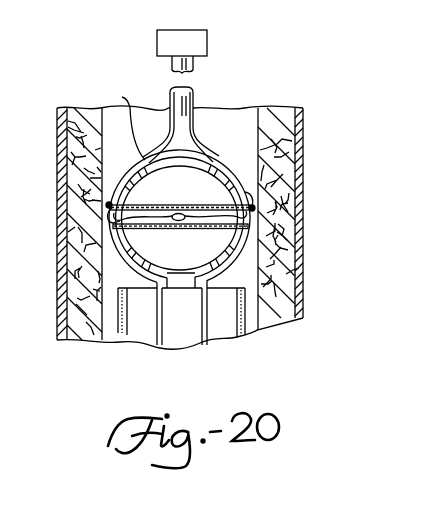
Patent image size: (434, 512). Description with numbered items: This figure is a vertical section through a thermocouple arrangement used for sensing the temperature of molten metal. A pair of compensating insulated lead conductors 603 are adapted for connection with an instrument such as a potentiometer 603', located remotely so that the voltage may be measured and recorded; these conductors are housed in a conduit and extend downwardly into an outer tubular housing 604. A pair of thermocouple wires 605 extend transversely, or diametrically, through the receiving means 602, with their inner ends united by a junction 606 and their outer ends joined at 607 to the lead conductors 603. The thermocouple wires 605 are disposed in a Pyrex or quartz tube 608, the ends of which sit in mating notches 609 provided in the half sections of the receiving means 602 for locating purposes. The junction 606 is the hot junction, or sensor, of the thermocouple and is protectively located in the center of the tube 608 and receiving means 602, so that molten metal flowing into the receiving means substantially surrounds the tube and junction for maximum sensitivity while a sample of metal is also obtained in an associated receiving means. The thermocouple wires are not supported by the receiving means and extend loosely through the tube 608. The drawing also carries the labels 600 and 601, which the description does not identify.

The housing wall 600 is at (296, 109).
The spherical chamber 601 is at (186, 197).
The receiving means 602 is at (101, 211).
The compensating insulated lead conductors 603 is at (185, 111).
The potentiometer 603' is at (211, 51).
The outer tubular housing 604 is at (287, 136).
The thermocouple wires 605 is at (140, 208).
The junction 606 is at (178, 221).
The outer ends of thermocouple wires 607 is at (109, 205).
The Pyrex or quartz tube 608 is at (232, 226).
The mating notches 609 is at (113, 229).